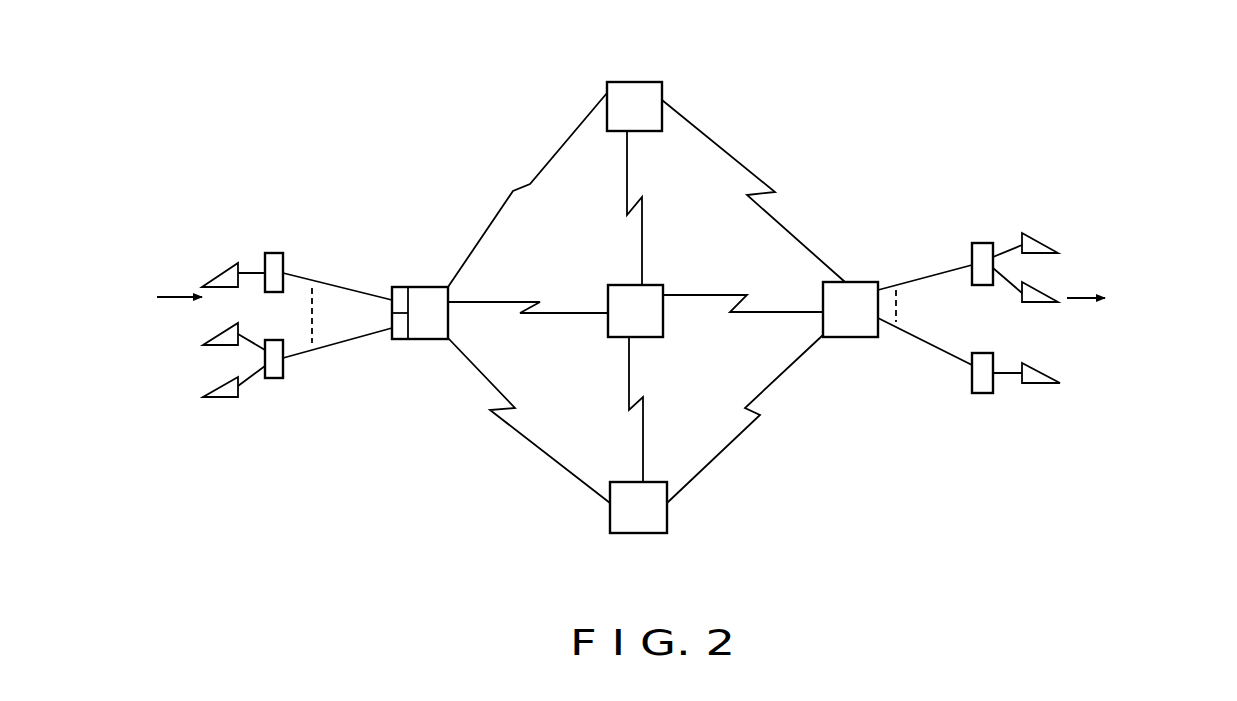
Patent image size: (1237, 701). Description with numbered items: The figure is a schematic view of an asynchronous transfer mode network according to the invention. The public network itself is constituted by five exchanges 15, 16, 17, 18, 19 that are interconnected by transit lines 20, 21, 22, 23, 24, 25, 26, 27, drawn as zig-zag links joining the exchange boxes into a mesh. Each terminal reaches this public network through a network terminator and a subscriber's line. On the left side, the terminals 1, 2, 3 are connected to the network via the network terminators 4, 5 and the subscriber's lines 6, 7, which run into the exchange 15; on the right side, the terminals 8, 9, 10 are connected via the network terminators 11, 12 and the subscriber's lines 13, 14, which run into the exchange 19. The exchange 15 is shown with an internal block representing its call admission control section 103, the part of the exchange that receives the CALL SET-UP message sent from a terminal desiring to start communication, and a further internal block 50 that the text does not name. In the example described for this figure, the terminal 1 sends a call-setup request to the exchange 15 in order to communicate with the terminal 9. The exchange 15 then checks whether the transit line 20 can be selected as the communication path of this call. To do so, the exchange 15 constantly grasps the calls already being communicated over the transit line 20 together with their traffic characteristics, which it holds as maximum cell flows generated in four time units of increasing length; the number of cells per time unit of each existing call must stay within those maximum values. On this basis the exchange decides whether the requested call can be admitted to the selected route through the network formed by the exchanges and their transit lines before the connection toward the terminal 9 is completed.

The terminal 1 is at (217, 272).
The terminal 2 is at (208, 345).
The terminal 3 is at (207, 397).
The network terminator 4 is at (272, 253).
The network terminator 5 is at (273, 382).
The subscriber's line 6 is at (315, 280).
The subscriber's line 7 is at (330, 345).
The terminal 8 is at (1047, 245).
The terminal 9 is at (1045, 288).
The terminal 10 is at (1043, 385).
The network terminator 11 is at (972, 285).
The network terminator 12 is at (980, 393).
The subscriber's line 13 is at (900, 283).
The subscriber's line 14 is at (940, 347).
The exchange 15 is at (448, 330).
The exchange 16 is at (643, 82).
The exchange 17 is at (657, 285).
The exchange 18 is at (643, 533).
The exchange 19 is at (833, 337).
The transit line 20 is at (553, 147).
The transit line 21 is at (524, 300).
The transit line 22 is at (553, 460).
The transit line 23 is at (628, 167).
The transit line 24 is at (643, 412).
The transit line 25 is at (743, 166).
The transit line 26 is at (727, 294).
The transit line 27 is at (730, 443).
The exchange sub-unit 50 is at (403, 287).
The call admission control section 103 is at (400, 339).